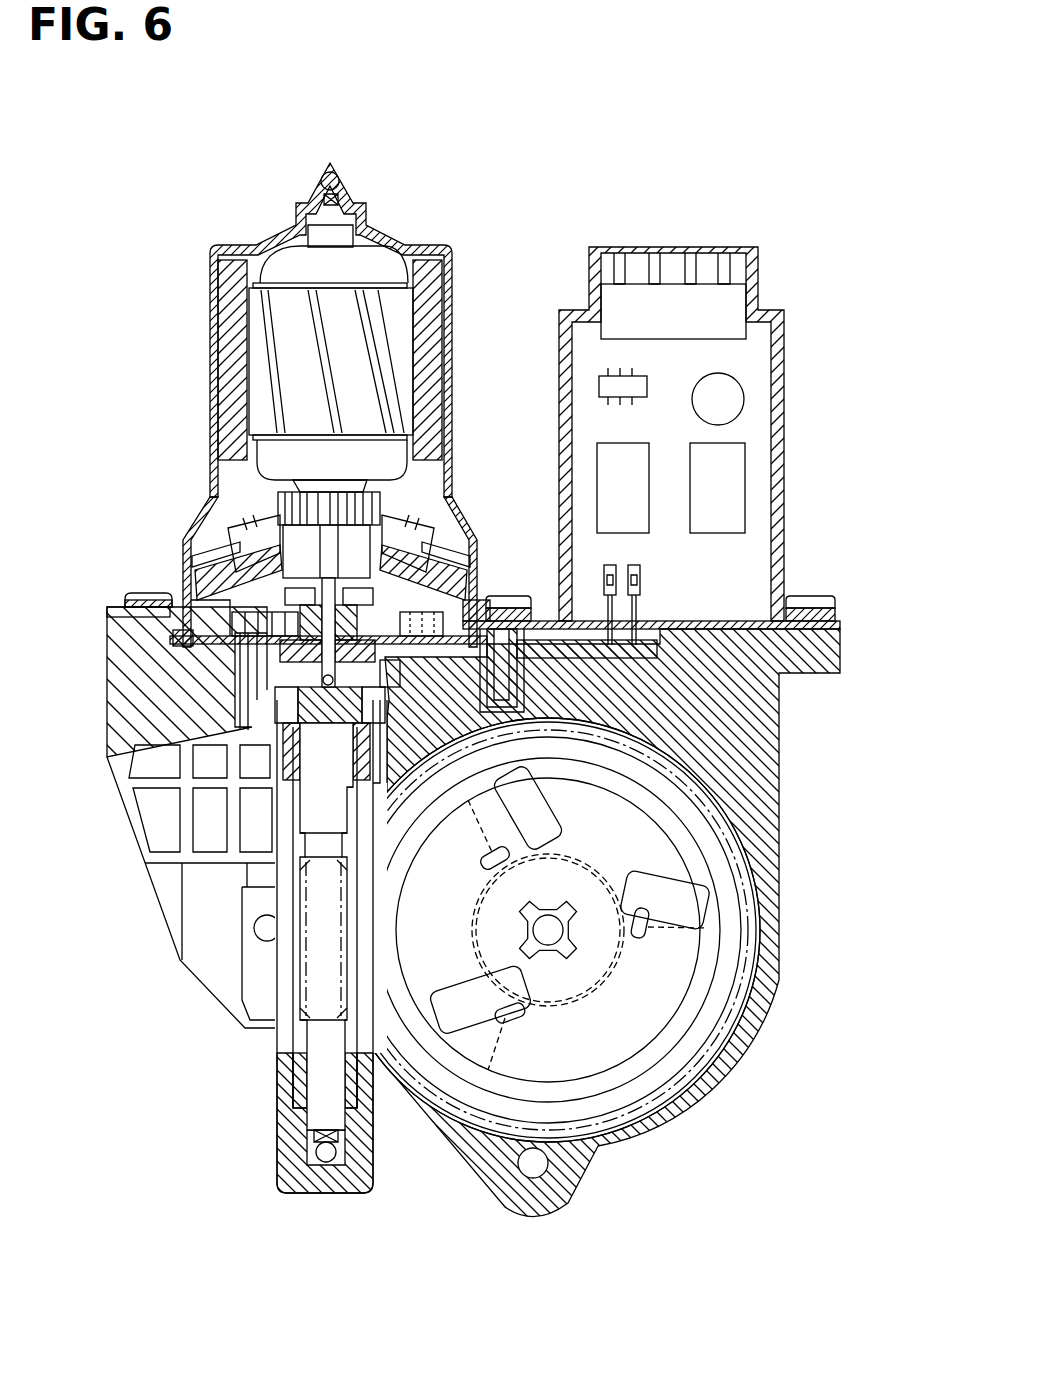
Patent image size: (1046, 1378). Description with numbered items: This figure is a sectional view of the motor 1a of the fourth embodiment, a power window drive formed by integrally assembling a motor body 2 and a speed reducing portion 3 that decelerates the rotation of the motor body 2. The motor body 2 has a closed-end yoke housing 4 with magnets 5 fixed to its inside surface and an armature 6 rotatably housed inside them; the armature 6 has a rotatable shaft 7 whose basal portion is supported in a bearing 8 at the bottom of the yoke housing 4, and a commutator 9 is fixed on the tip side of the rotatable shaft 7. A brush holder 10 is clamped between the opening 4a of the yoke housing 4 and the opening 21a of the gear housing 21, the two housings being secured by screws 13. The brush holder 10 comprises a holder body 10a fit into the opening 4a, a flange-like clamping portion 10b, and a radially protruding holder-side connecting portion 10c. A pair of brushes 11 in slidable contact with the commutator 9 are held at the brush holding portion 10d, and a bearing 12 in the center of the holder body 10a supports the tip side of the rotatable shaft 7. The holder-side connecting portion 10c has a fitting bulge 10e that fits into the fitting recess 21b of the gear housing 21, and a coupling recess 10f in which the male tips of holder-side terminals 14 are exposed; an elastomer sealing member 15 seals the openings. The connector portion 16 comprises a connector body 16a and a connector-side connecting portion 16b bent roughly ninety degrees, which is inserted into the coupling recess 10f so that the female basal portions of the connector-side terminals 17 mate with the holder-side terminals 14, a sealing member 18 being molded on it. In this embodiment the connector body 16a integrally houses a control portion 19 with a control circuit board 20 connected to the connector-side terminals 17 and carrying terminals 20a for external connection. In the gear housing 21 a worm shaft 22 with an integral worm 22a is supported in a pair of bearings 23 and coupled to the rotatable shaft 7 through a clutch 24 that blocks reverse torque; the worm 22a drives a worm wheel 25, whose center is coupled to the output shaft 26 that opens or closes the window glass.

The motor 1a is at (742, 162).
The motor body 2 is at (448, 243).
The speed reducing portion 3 is at (784, 770).
The yoke housing 4 is at (455, 284).
The opening of the yoke housing 4a is at (186, 592).
The magnets 5 is at (220, 316).
The armature 6 is at (400, 352).
The rotatable shaft 7 is at (326, 551).
The bearing 8 is at (350, 212).
The commutator 9 is at (348, 492).
The brush holder 10 is at (472, 560).
The holder body 10a is at (455, 522).
The clamping portion 10b is at (176, 562).
The holder-side connecting portion 10c is at (576, 712).
The brush holding portion 10d is at (210, 508).
The fitting bulge 10e is at (545, 735).
The coupling recess 10f is at (560, 660).
The brushes 11 is at (262, 545).
The bearing 12 is at (329, 527).
The screws 13 is at (135, 597).
The holder-side terminals 14 is at (513, 735).
The sealing member 15 is at (168, 640).
The connector portion 16 is at (762, 252).
The connector body 16a is at (786, 328).
The connector-side connecting portion 16b is at (545, 690).
The connector-side terminals 17 is at (620, 612).
The sealing member 18 is at (508, 608).
The control portion 19 is at (787, 428).
The control circuit board 20 is at (762, 484).
The terminals for external connection 20a is at (619, 252).
The gear housing 21 is at (158, 888).
The opening of the gear housing 21a is at (140, 640).
The fitting recess 21b is at (492, 686).
The worm shaft 22 is at (320, 1040).
The worm 22a is at (300, 896).
The bearings 23 is at (287, 780).
The clutch 24 is at (454, 612).
The worm wheel 25 is at (762, 856).
The output shaft 26 is at (550, 945).